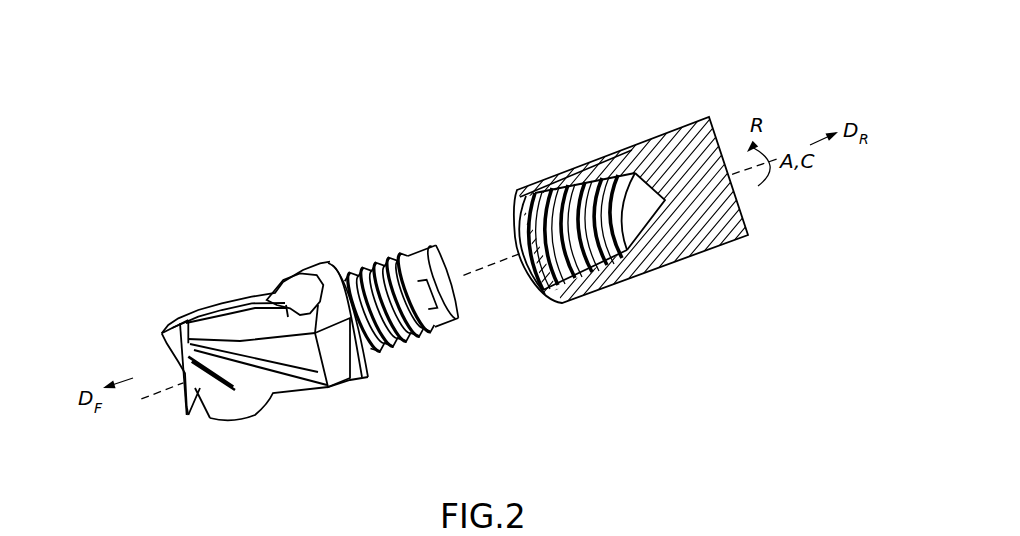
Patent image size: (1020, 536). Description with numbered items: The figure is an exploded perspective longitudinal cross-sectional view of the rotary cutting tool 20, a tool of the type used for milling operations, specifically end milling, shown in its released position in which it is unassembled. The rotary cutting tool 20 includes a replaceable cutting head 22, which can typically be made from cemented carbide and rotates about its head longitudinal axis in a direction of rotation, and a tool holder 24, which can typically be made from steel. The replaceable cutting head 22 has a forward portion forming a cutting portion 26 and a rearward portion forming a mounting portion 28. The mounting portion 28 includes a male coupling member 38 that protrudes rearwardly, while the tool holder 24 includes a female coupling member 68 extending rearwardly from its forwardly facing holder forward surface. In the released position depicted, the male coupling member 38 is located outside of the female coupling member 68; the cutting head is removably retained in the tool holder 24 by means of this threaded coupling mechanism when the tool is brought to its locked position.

The rotary cutting tool 20 is at (220, 198).
The replaceable cutting head 22 is at (188, 256).
The tool holder 24 is at (643, 115).
The cutting portion 26 is at (290, 428).
The mounting portion 28 is at (414, 370).
The male coupling member 38 is at (375, 245).
The female coupling member 68 is at (514, 235).